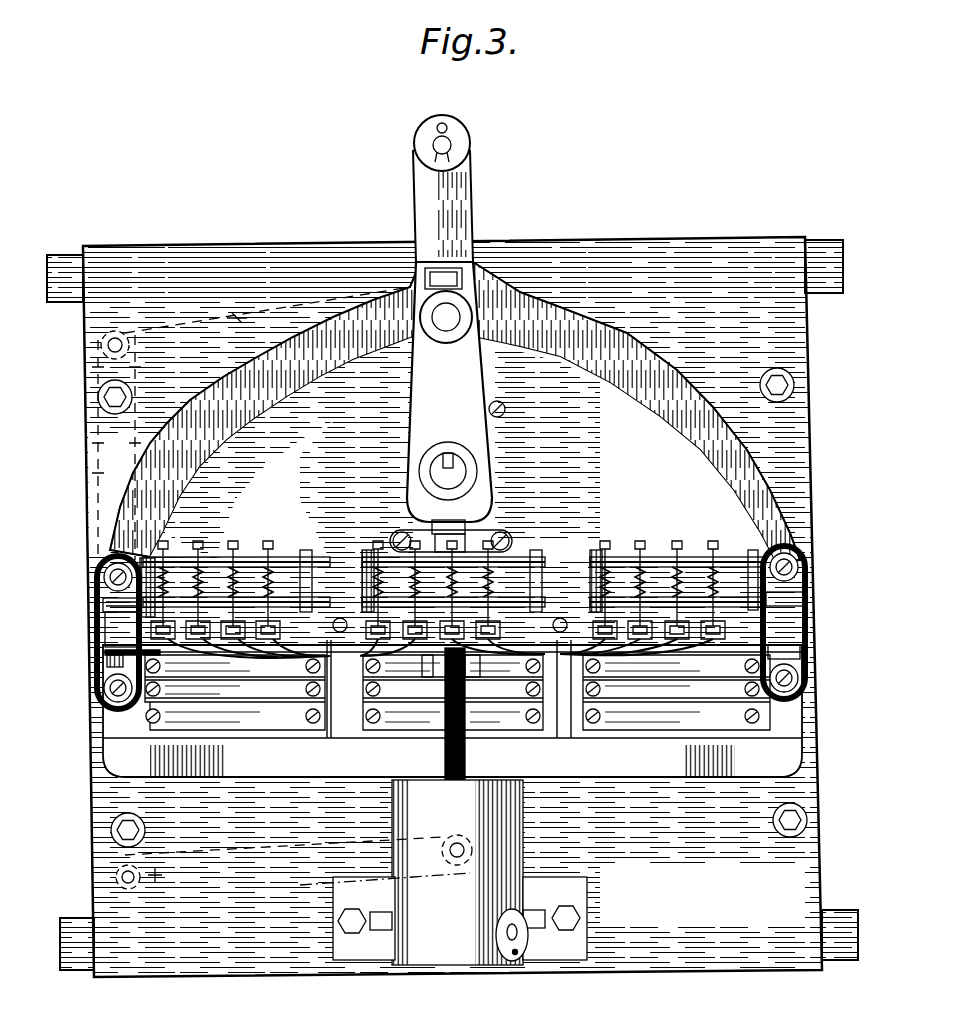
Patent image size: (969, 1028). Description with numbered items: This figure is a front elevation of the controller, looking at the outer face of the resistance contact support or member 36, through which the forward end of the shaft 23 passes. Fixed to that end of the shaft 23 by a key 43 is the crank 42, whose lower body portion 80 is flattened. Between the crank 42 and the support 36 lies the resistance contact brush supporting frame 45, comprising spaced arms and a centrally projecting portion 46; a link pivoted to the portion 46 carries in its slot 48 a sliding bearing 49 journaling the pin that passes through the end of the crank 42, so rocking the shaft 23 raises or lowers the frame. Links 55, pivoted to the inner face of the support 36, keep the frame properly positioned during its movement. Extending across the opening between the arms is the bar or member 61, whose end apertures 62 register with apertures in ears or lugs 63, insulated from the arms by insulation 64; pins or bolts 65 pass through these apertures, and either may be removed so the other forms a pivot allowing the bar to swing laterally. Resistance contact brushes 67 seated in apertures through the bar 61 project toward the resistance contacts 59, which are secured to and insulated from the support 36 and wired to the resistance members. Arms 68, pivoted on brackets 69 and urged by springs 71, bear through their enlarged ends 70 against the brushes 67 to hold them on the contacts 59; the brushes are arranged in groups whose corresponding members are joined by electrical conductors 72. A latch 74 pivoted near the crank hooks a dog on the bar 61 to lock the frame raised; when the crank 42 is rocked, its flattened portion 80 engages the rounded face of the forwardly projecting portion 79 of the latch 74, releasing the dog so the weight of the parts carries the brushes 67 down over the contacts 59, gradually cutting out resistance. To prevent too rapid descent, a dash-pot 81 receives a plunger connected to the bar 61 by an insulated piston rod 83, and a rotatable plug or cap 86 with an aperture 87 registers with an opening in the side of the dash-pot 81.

The resistance contact support 36 is at (752, 252).
The resistance contact brush supporting frame 45 is at (590, 332).
The centrally projecting portion 46 is at (414, 192).
The slot 48 is at (470, 262).
The bearing 49 is at (432, 278).
The crank 42 is at (432, 402).
The key 43 is at (448, 453).
The shaft 23 is at (438, 474).
The flattened lower portion of crank 80 is at (457, 527).
The projecting portion of latch 79 is at (498, 513).
The latch 74 is at (458, 547).
The apertures 62 is at (307, 558).
The brackets 69 is at (522, 555).
The yielding members 71 is at (230, 550).
The arms 68 is at (240, 567).
The resistance contact brushes 67 is at (305, 612).
The bar 61 is at (557, 600).
The enlarged free ends of arms 70 is at (160, 627).
The resistance contacts 59 is at (275, 692).
The electrical conductors 72 is at (338, 647).
The insulated piston rod 83 is at (445, 747).
The dash-pot 81 is at (460, 872).
The plug or cap 86 is at (497, 942).
The aperture 87 is at (515, 955).
The ears or lugs 63 is at (98, 653).
The insulation 64 is at (95, 565).
The pin or bolt 65 is at (93, 688).
The links 55 is at (248, 300).